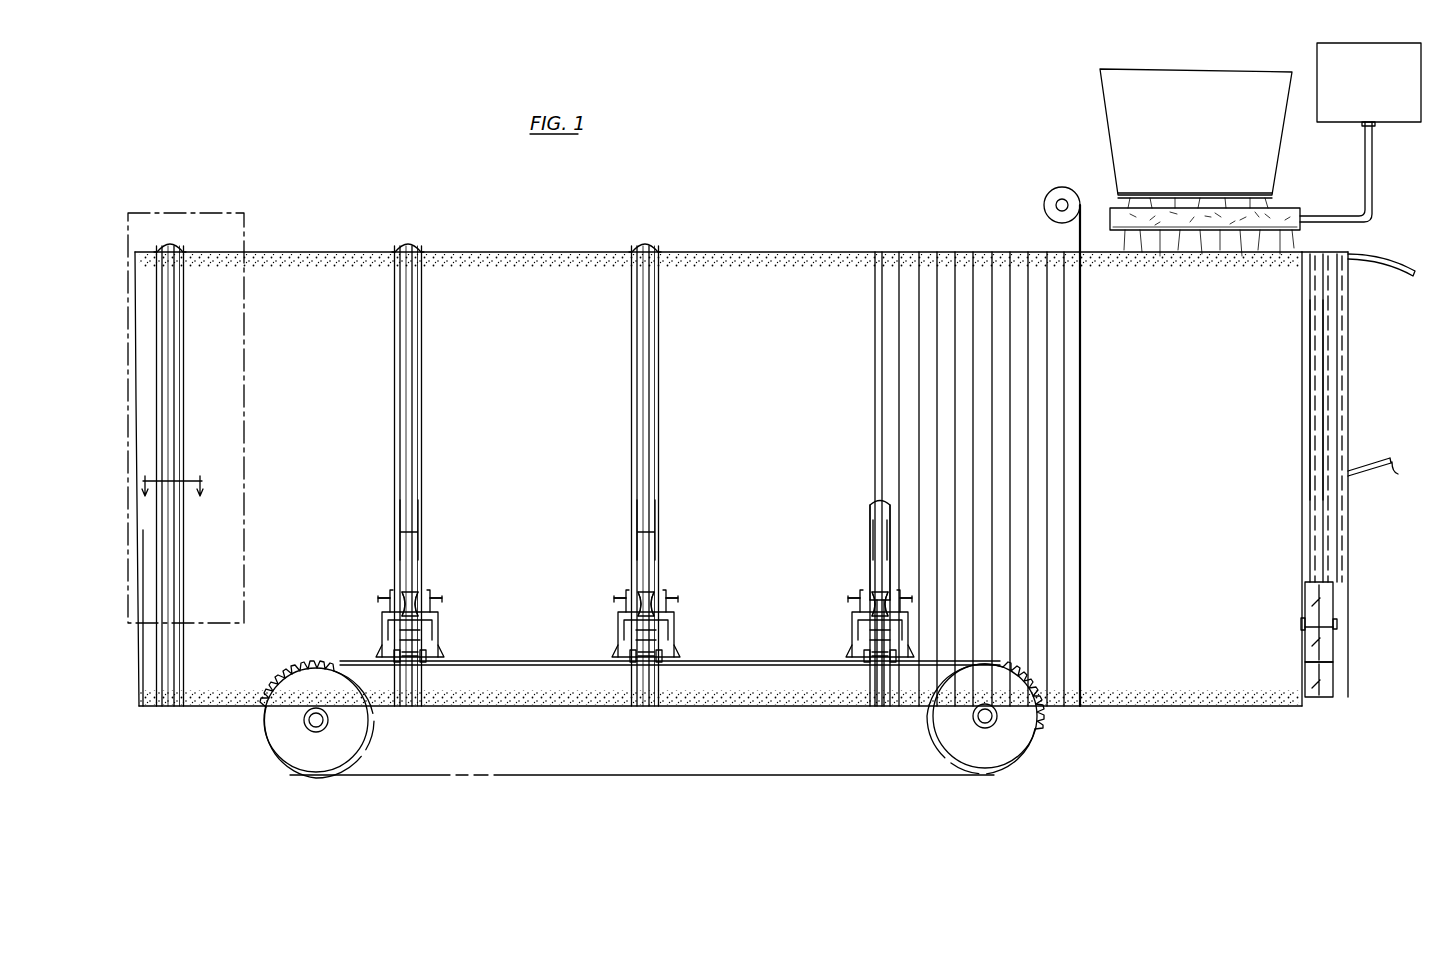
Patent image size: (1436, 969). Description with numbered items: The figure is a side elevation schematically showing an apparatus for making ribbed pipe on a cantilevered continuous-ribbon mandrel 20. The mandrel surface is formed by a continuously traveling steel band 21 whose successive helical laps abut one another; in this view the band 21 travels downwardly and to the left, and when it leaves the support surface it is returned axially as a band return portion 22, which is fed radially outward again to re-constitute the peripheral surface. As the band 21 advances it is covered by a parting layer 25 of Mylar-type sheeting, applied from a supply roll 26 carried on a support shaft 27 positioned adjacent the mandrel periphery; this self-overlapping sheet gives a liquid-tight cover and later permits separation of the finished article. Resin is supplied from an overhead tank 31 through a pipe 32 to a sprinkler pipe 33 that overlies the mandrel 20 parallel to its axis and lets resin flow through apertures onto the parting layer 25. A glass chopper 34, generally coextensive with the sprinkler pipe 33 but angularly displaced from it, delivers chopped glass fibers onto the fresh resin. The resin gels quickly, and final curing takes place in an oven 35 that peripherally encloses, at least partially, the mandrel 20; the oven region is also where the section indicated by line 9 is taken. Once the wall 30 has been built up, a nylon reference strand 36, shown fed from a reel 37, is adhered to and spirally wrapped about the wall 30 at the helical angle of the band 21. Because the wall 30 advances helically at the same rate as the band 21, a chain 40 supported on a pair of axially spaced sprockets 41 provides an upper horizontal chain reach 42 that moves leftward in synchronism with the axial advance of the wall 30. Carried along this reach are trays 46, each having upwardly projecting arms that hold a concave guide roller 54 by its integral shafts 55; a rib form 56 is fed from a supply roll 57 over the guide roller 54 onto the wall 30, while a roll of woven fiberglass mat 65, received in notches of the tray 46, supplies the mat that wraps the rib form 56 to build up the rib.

The section line 9- 9 is at (172, 500).
The mandrel 20 is at (1352, 566).
The steel band 21 is at (1314, 402).
The band return portion 22 is at (1403, 278).
The parting layer 25 is at (1330, 680).
The supply roll 26 is at (1330, 607).
The support shaft 27 is at (1337, 624).
The wall 30 is at (1200, 417).
The tank 31 is at (1398, 113).
The pipe 32 is at (1373, 196).
The sprinkler pipe 33 is at (1300, 212).
The glass chopper 34 is at (1108, 110).
The oven 35 is at (244, 222).
The reference strand 36 is at (1081, 346).
The reel 37 is at (1044, 206).
The chain 40 is at (830, 776).
The sprockets 41 is at (282, 750).
The upper horizontal chain reach 42 is at (558, 660).
The tray 46 is at (444, 620).
The guide roller 54 is at (420, 594).
The integral shafts 55 is at (440, 603).
The rib form 56 is at (868, 576).
The supply roll 57 is at (422, 512).
The roll of mat 65 is at (395, 468).